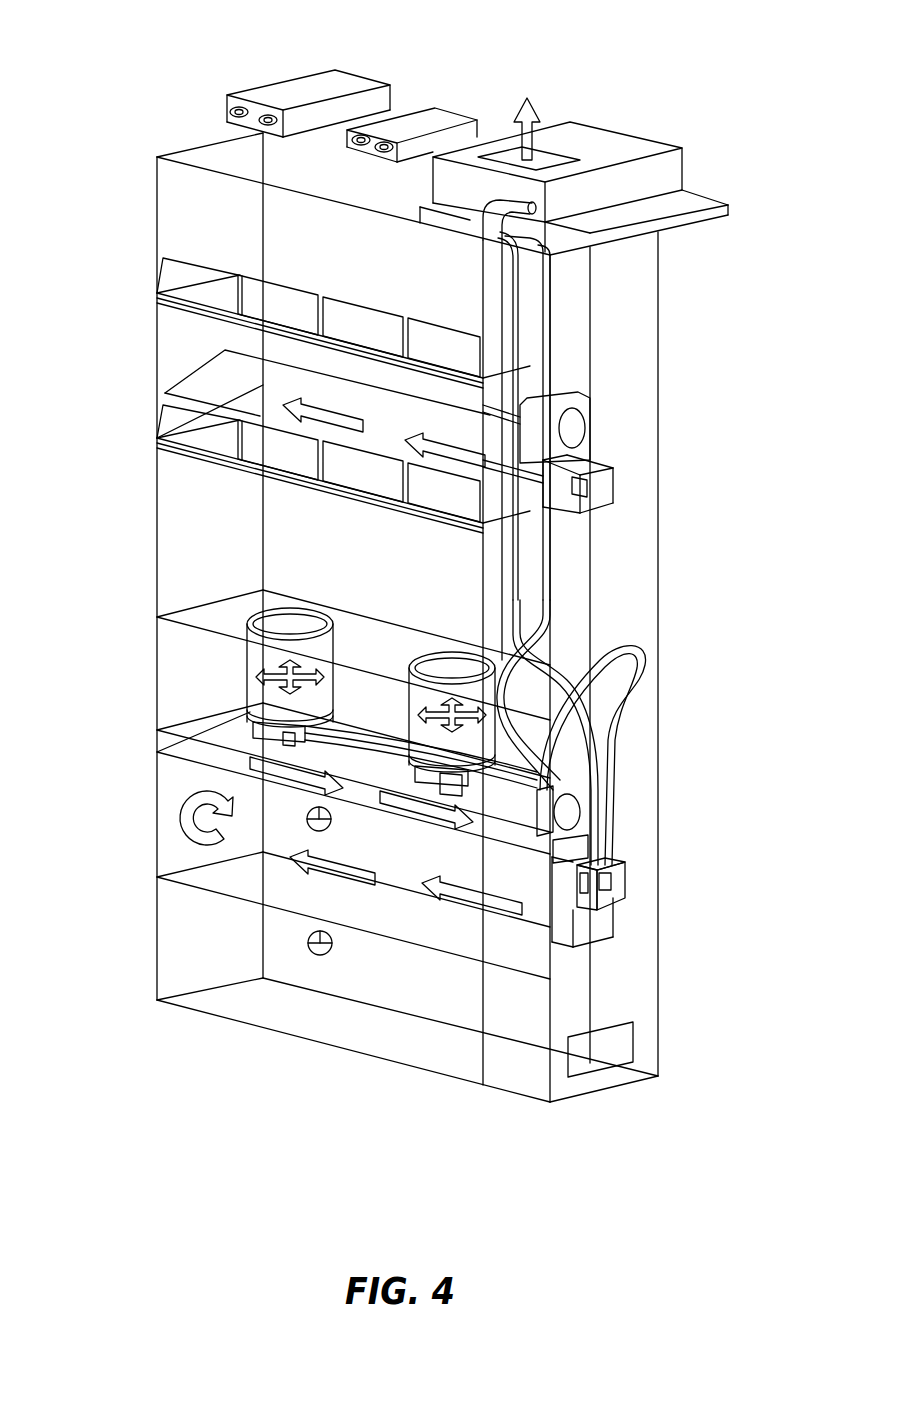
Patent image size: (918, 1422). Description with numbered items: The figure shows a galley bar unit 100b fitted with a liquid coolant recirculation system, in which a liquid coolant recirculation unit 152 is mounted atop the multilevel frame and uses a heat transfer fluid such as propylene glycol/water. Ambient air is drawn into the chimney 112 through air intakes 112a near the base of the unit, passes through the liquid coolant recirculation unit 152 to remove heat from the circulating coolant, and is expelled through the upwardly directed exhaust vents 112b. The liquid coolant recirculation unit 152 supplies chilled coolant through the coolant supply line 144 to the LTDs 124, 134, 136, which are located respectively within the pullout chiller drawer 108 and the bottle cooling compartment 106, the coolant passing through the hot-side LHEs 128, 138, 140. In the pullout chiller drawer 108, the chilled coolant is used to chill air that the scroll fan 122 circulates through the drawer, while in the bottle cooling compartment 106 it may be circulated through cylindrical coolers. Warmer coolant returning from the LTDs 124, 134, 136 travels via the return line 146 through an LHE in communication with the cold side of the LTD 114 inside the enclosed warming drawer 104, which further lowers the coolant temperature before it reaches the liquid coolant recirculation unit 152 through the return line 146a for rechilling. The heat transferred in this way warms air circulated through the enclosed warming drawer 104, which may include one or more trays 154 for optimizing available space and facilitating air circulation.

The galley bar unit 100b is at (80, 62).
The enclosed warming drawer 104 is at (180, 336).
The bottle cooling compartment 106 is at (175, 527).
The pullout chiller drawer 108 is at (190, 857).
The chimney 112 is at (527, 1088).
The air intakes 112a is at (613, 1045).
The exhaust vents 112b is at (543, 150).
The LTD 114 is at (580, 488).
The scroll fan 122 is at (577, 820).
The LTD 124 is at (620, 883).
The hot-side LHE 128 is at (623, 880).
The LTD 134 is at (290, 743).
The LTD 136 is at (463, 724).
The hot-side LHE 138 is at (160, 754).
The hot-side LHE 140 is at (447, 777).
The coolant supply line 144 is at (553, 374).
The return line 146 is at (517, 617).
The return line 146a is at (553, 350).
The liquid coolant recirculation unit 152 is at (663, 178).
The trays 154 is at (170, 383).